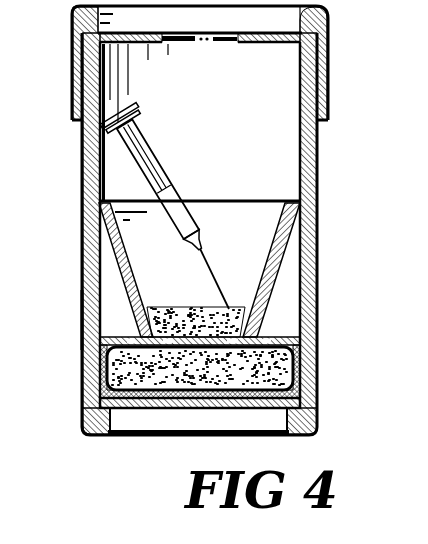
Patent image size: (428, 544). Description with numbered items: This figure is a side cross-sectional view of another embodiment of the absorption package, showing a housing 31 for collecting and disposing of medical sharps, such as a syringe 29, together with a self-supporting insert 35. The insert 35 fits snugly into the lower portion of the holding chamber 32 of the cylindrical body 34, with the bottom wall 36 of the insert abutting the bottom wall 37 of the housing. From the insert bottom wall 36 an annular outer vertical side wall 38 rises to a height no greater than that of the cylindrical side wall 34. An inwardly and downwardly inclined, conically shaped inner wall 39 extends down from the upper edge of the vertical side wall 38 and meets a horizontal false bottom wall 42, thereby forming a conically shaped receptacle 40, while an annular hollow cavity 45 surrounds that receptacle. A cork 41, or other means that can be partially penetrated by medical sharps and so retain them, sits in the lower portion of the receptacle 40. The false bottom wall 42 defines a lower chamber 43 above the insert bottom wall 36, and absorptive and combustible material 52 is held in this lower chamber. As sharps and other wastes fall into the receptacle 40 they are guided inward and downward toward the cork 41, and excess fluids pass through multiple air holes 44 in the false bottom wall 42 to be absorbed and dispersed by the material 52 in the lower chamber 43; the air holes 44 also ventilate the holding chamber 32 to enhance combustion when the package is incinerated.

The syringe 29 is at (165, 185).
The housing 31 is at (74, 178).
The holding chamber 32 is at (193, 130).
The cylindrical body 34 is at (82, 227).
The self-supporting insert 35 is at (253, 194).
The bottom wall of the insert 36 is at (175, 410).
The bottom wall of the housing 37 is at (138, 413).
The annular outer vertical side wall 38 is at (83, 279).
The conically shaped inner wall 39 is at (266, 248).
The conically shaped receptacle 40 is at (172, 276).
The cork 41 is at (165, 308).
The false bottom wall 42 is at (237, 413).
The lower chamber 43 is at (147, 358).
The air holes 44 is at (262, 333).
The annular hollow cavity 45 is at (82, 322).
The absorptive and combustible material 52 is at (316, 397).